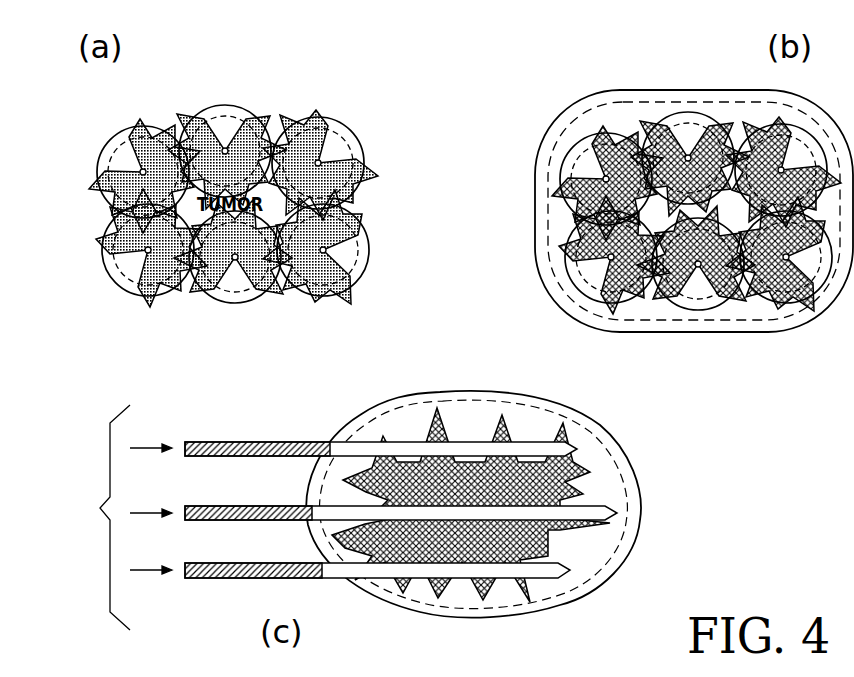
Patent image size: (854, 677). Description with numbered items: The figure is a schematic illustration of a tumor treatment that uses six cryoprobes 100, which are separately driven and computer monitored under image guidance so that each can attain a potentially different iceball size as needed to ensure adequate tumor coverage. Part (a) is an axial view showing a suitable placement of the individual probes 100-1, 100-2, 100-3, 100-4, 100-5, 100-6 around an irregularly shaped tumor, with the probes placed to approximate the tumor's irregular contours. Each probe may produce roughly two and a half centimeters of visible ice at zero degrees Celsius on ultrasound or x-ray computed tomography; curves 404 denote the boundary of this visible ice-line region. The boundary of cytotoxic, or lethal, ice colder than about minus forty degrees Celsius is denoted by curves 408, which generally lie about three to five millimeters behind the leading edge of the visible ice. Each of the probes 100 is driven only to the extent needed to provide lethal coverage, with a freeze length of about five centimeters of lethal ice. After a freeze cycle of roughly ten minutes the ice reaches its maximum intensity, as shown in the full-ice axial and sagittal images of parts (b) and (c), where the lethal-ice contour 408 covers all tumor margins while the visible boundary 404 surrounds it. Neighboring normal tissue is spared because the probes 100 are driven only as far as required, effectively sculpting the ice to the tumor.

The cryoprobes 100 is at (329, 517).
The cryoprobe 100-1 is at (143, 173).
The cryoprobe 100-2 is at (148, 250).
The cryoprobe 100-3 is at (235, 257).
The cryoprobe 100-4 is at (225, 150).
The cryoprobe 100-5 is at (318, 163).
The cryoprobe 100-6 is at (323, 250).
The visible ice boundary curve 404 is at (545, 133).
The lethal ice boundary curve 408 is at (548, 292).